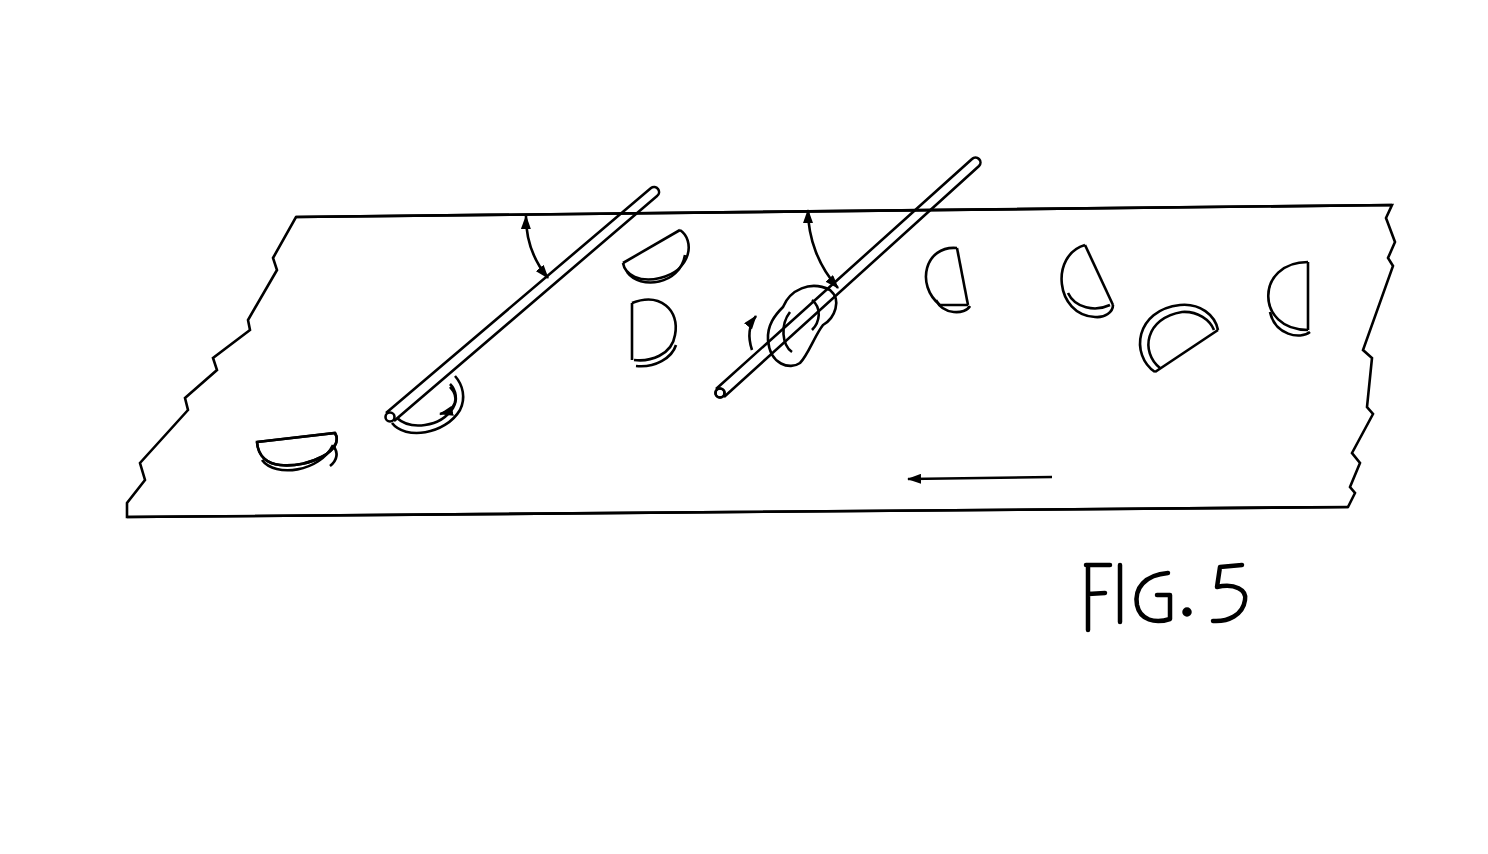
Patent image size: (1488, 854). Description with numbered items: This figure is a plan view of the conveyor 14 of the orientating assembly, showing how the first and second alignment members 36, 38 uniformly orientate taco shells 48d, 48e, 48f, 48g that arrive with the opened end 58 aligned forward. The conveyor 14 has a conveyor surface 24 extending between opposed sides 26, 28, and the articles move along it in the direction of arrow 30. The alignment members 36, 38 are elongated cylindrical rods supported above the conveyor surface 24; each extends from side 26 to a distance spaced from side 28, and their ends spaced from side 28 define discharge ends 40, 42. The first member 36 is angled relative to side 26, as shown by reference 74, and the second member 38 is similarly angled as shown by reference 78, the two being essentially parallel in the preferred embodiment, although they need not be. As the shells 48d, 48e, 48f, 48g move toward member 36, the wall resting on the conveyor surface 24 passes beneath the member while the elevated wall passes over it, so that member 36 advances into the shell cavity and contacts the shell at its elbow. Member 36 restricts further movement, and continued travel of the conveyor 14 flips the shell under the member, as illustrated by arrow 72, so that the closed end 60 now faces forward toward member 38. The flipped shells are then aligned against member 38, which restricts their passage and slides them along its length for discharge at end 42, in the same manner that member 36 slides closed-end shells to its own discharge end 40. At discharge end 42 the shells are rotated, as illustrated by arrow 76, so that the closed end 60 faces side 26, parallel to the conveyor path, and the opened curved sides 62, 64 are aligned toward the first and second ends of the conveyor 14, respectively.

The conveyor 14 is at (1200, 147).
The conveyor surface 24 is at (337, 275).
The side 26 is at (372, 217).
The side 28 is at (545, 516).
The arrow 30 is at (1000, 475).
The first alignment member 36 is at (986, 160).
The second alignment member 38 is at (664, 184).
The discharge end 40 is at (716, 400).
The discharge end 42 is at (392, 426).
The taco shell 48d is at (1318, 263).
The taco shell 48e is at (1208, 304).
The taco shell 48f is at (1100, 249).
The taco shell 48g is at (972, 254).
The opened end 58 is at (298, 468).
The closed end 60 is at (270, 438).
The curved side 62 is at (337, 447).
The curved side 64 is at (257, 460).
The arrow 72 is at (803, 355).
The angle reference 74 is at (815, 240).
The arrow 76 is at (460, 383).
The angle reference 78 is at (527, 247).